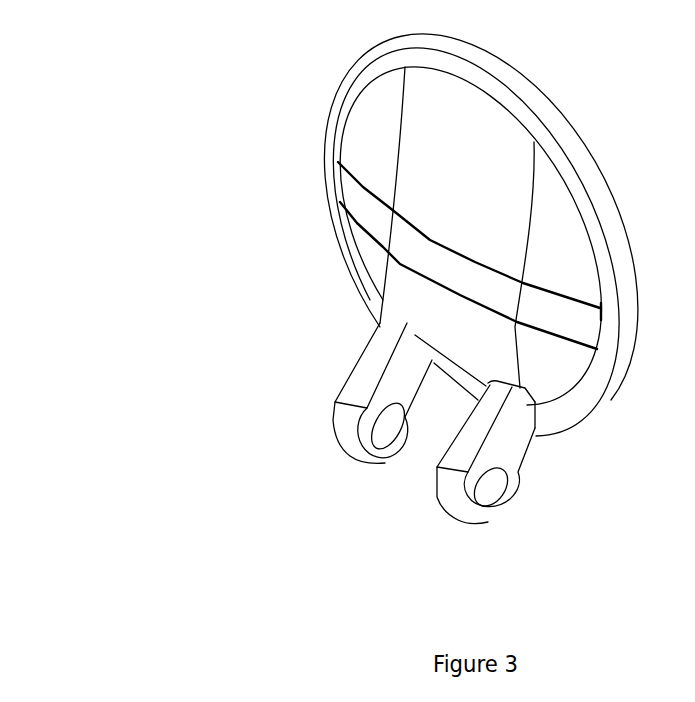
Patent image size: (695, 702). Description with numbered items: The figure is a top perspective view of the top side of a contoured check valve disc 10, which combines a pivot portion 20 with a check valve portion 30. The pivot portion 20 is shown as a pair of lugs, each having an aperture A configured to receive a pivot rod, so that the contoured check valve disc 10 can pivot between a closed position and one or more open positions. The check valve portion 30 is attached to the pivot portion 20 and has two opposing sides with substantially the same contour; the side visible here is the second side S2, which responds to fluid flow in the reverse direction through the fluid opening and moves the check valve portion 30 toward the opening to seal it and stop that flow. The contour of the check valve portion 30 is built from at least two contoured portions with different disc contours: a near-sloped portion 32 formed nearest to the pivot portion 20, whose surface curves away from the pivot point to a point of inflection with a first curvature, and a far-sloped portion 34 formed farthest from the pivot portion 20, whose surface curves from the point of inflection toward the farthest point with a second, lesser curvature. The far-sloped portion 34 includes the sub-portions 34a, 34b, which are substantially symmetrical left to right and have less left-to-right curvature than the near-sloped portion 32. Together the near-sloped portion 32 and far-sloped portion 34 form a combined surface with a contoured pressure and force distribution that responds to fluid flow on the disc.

The contoured check valve disc 10 is at (178, 61).
The check valve portion 30 is at (307, 135).
The far-sloped portion 34 is at (296, 171).
The sub-portion of far-sloped portion 34a is at (417, 258).
The sub-portion of far-sloped portion 34b is at (427, 180).
The second side S2 is at (293, 251).
The near-sloped portion 32 is at (401, 320).
The pivot portion 20 is at (340, 438).
The aperture A is at (378, 423).